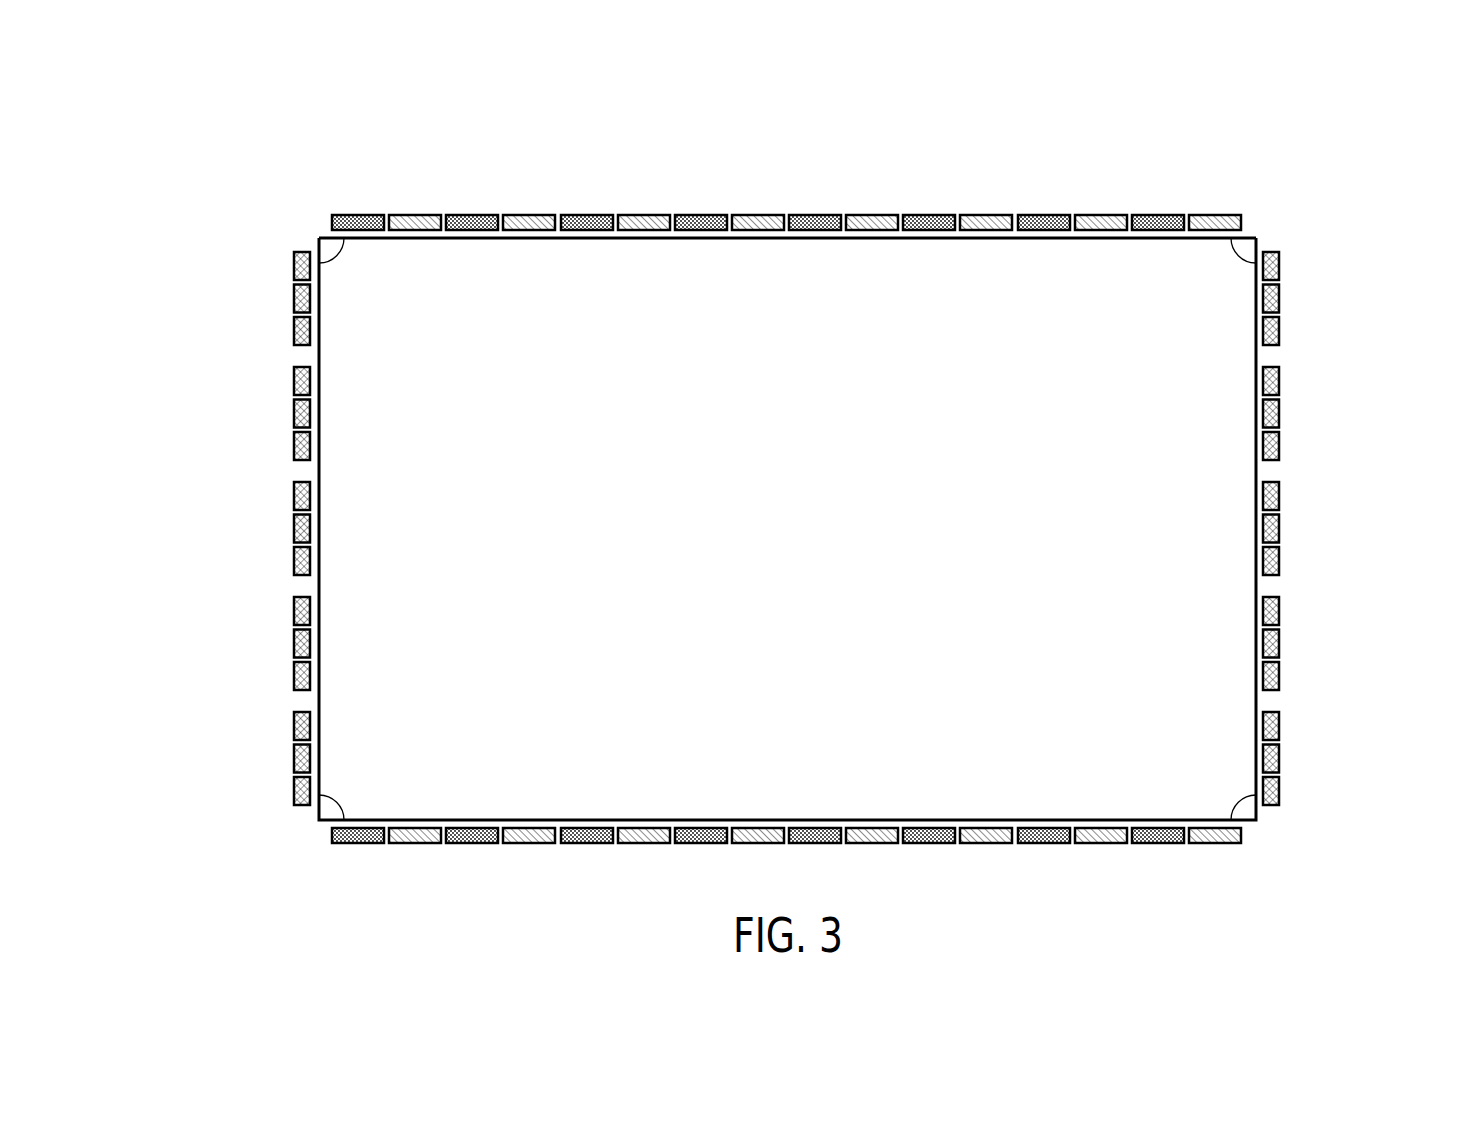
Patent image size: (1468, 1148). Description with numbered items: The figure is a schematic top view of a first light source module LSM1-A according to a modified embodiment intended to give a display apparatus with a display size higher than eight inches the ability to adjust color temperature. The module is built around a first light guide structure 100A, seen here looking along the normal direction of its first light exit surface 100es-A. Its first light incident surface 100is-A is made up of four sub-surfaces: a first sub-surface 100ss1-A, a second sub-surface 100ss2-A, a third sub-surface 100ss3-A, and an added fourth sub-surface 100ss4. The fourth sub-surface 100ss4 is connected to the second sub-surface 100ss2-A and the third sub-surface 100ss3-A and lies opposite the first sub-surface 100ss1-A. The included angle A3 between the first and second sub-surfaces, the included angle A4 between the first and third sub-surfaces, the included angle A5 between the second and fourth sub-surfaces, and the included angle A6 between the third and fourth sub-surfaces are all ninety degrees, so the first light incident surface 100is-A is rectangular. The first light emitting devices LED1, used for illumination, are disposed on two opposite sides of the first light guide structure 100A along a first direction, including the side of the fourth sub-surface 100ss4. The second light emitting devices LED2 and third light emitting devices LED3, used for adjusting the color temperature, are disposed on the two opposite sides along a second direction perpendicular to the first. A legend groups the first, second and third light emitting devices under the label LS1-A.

The first light source module LSM1-A is at (1452, 883).
The first light guide structure 100A is at (1222, 360).
The first light exit surface 100es-A is at (865, 278).
The first light incident surface 100is-A is at (180, 52).
The first sub-surface 100ss1-A is at (318, 470).
The second sub-surface 100ss2-A is at (1160, 238).
The third sub-surface 100ss3-A is at (786, 857).
The fourth sub-surface 100ss4 is at (1257, 472).
The light source LS1-A is at (445, 52).
The first light emitting devices LED1 is at (298, 413).
The second light emitting devices LED2 is at (1043, 845).
The third light emitting devices LED3 is at (643, 845).
The included angle A3 is at (345, 267).
The included angle A4 is at (345, 792).
The included angle A5 is at (1230, 267).
The included angle A6 is at (1230, 792).